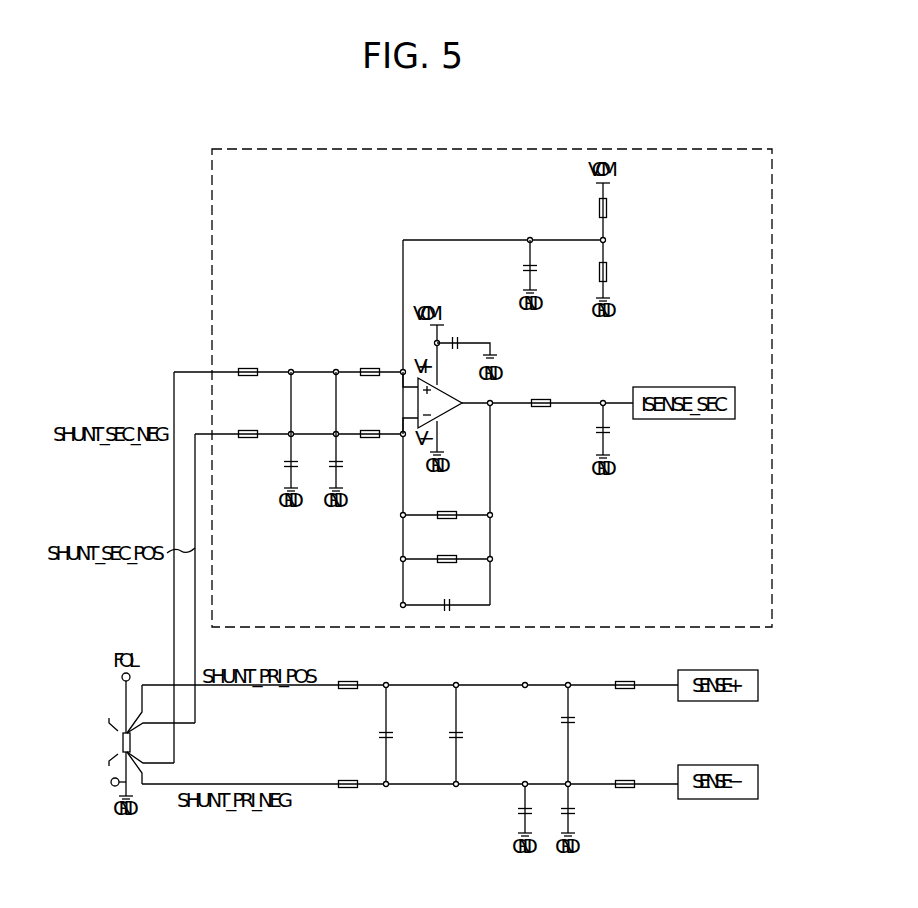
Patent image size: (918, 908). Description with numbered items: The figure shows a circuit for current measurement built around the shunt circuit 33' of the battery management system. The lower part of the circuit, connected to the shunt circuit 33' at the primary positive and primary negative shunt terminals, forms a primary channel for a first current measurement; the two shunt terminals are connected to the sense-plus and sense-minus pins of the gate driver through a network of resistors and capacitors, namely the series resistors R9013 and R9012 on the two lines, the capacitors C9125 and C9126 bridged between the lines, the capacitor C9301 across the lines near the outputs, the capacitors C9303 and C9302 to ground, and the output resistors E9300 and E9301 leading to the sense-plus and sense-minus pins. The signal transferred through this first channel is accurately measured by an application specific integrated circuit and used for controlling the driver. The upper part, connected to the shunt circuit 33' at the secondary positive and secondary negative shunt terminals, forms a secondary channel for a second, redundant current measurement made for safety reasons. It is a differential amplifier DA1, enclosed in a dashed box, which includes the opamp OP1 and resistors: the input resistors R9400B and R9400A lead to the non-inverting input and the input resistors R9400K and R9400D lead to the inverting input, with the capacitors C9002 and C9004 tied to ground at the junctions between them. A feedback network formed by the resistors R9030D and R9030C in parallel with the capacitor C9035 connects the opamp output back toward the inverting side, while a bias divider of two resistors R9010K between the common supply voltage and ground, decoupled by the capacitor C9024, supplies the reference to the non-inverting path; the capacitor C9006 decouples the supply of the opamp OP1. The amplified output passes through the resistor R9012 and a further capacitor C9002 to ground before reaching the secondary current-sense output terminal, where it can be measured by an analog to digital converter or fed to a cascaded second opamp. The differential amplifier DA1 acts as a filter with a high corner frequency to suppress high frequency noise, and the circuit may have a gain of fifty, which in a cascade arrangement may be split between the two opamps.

The shunt circuit 33' is at (133, 736).
The differential amplifier DA1 is at (495, 146).
The opamp OP1 is at (444, 390).
The bias resistor R9010K is at (628, 242).
The capacitor C9024 is at (554, 266).
The capacitor C9006 is at (467, 334).
The resistor R9400A is at (372, 361).
The resistor R9400B is at (249, 361).
The resistor R9400K is at (250, 423).
The resistor R9400D is at (372, 423).
The capacitor C9002 is at (423, 431).
The capacitor C9004 is at (361, 431).
The resistor R9012 is at (445, 595).
The feedback resistor R9030D is at (447, 504).
The feedback resistor R9030C is at (447, 548).
The feedback capacitor C9035 is at (446, 595).
The resistor R9013 is at (352, 700).
The capacitor C9125 is at (409, 734).
The capacitor C9126 is at (479, 734).
The capacitor C9301 is at (591, 734).
The capacitor C9302 is at (591, 810).
The capacitor C9303 is at (501, 810).
The resistor E9300 is at (625, 673).
The resistor E9301 is at (625, 773).